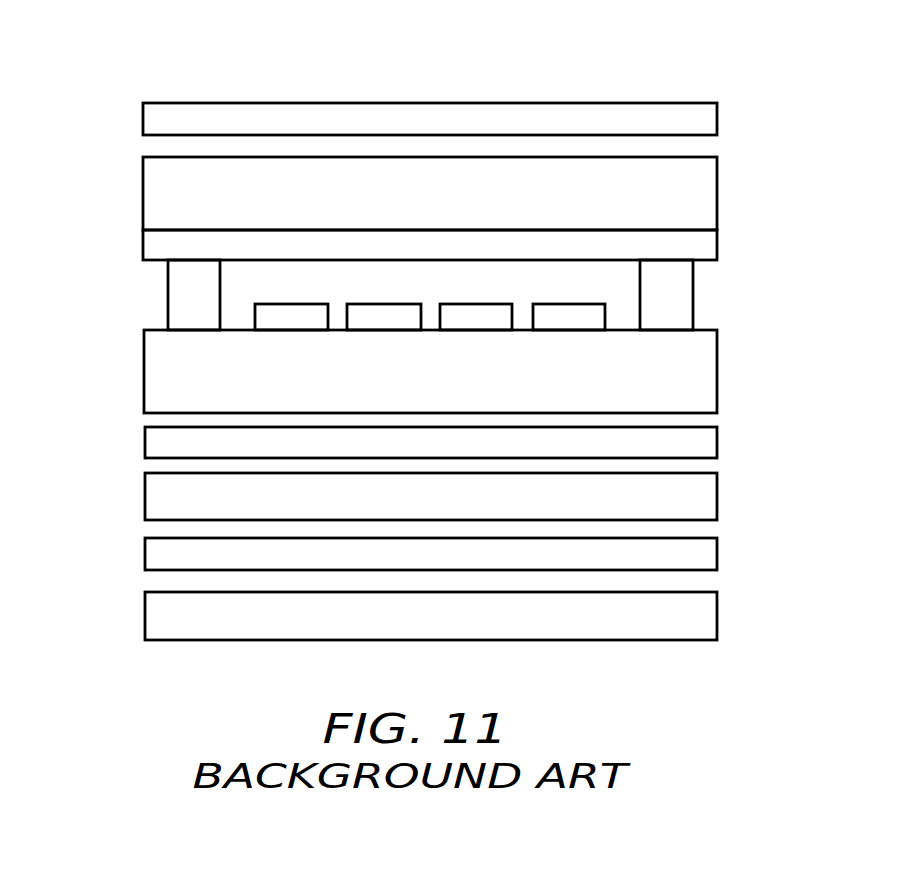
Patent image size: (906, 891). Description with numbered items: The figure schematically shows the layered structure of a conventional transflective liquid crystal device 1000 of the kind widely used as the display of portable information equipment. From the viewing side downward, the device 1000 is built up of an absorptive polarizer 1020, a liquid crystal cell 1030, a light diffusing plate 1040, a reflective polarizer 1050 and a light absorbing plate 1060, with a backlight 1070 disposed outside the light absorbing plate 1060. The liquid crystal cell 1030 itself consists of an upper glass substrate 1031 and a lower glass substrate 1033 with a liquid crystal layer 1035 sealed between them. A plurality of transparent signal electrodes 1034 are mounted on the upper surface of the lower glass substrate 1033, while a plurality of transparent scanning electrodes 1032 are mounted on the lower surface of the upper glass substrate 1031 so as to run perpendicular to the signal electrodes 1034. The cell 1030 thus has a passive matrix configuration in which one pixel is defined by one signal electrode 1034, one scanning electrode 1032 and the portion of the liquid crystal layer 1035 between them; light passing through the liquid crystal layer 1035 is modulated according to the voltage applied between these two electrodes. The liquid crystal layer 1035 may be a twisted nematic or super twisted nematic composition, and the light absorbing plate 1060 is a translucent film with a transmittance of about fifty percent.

The transflective liquid crystal device 1000 is at (452, 43).
The absorptive polarizer 1020 is at (143, 118).
The liquid crystal cell 1030 is at (146, 295).
The upper glass substrate 1031 is at (705, 180).
The transparent scanning electrodes 1032 is at (705, 238).
The lower glass substrate 1033 is at (705, 370).
The transparent signal electrodes 1034 is at (602, 307).
The liquid crystal layer 1035 is at (627, 277).
The light diffusing plate 1040 is at (145, 437).
The reflective polarizer 1050 is at (145, 490).
The light absorbing plate 1060 is at (145, 552).
The backlight 1070 is at (145, 613).